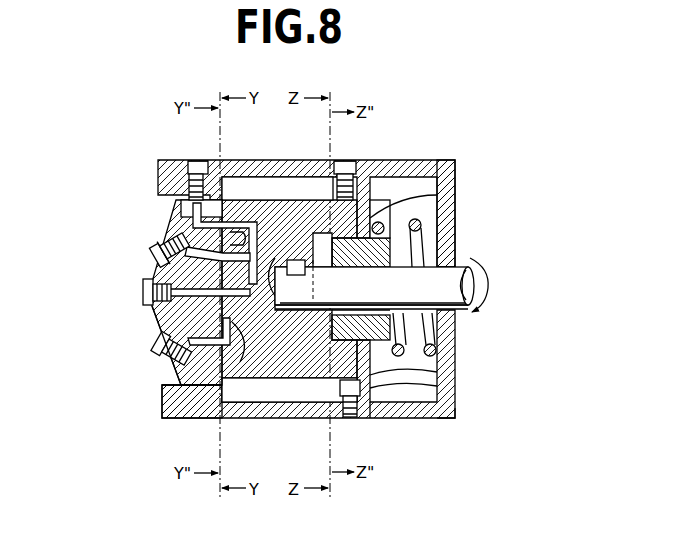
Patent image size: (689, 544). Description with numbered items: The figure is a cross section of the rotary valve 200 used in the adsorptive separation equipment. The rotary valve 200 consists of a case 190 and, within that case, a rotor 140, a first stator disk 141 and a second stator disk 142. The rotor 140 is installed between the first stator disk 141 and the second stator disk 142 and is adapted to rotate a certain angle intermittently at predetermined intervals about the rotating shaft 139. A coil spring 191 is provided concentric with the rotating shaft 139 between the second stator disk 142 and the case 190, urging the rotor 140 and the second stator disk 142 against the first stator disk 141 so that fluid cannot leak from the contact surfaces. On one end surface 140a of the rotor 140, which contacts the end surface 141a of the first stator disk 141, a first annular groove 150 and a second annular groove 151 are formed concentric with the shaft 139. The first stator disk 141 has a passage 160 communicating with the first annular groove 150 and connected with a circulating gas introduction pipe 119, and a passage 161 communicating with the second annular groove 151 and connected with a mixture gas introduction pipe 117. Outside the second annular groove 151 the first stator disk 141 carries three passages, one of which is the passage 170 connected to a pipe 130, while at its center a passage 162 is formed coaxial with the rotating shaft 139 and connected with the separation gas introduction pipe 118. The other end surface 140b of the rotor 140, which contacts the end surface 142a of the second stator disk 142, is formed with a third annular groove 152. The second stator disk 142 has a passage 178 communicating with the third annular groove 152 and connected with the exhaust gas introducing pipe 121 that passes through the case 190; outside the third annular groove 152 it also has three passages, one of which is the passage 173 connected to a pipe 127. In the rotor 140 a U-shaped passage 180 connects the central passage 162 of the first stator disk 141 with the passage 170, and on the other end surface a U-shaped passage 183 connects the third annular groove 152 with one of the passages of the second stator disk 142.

The rotary valve 200 is at (460, 161).
The third annular groove 152 is at (420, 192).
The second stator disk 142 is at (440, 398).
The end surface of the second stator disk 142a is at (400, 420).
The first stator disk 141 is at (195, 410).
The end surface of the first stator disk 141a is at (198, 166).
The U-shaped passage 183 is at (217, 404).
The exhaust gas introducing pipe 121 is at (350, 427).
The rotor 140 is at (263, 420).
The end surface of the rotor 140a is at (253, 148).
The other end surface of the rotor 140b is at (312, 420).
The U-shaped passage 180 is at (283, 166).
The passage 160 is at (170, 232).
The passage 170 is at (180, 210).
The pipe 130 is at (197, 154).
The passage 173 is at (380, 192).
The pipe 127 is at (347, 161).
The passage 178 is at (362, 391).
The separation gas introduction pipe 118 is at (150, 298).
The circulating gas introduction pipe 119 is at (168, 248).
The passage 162 is at (160, 278).
The mixture gas introduction pipe 117 is at (160, 365).
The passage 161 is at (172, 341).
The second annular groove 151 is at (160, 373).
The first annular groove 150 is at (178, 389).
The case 190 is at (455, 347).
The rotating shaft 139 is at (463, 259).
The coil spring 191 is at (425, 206).